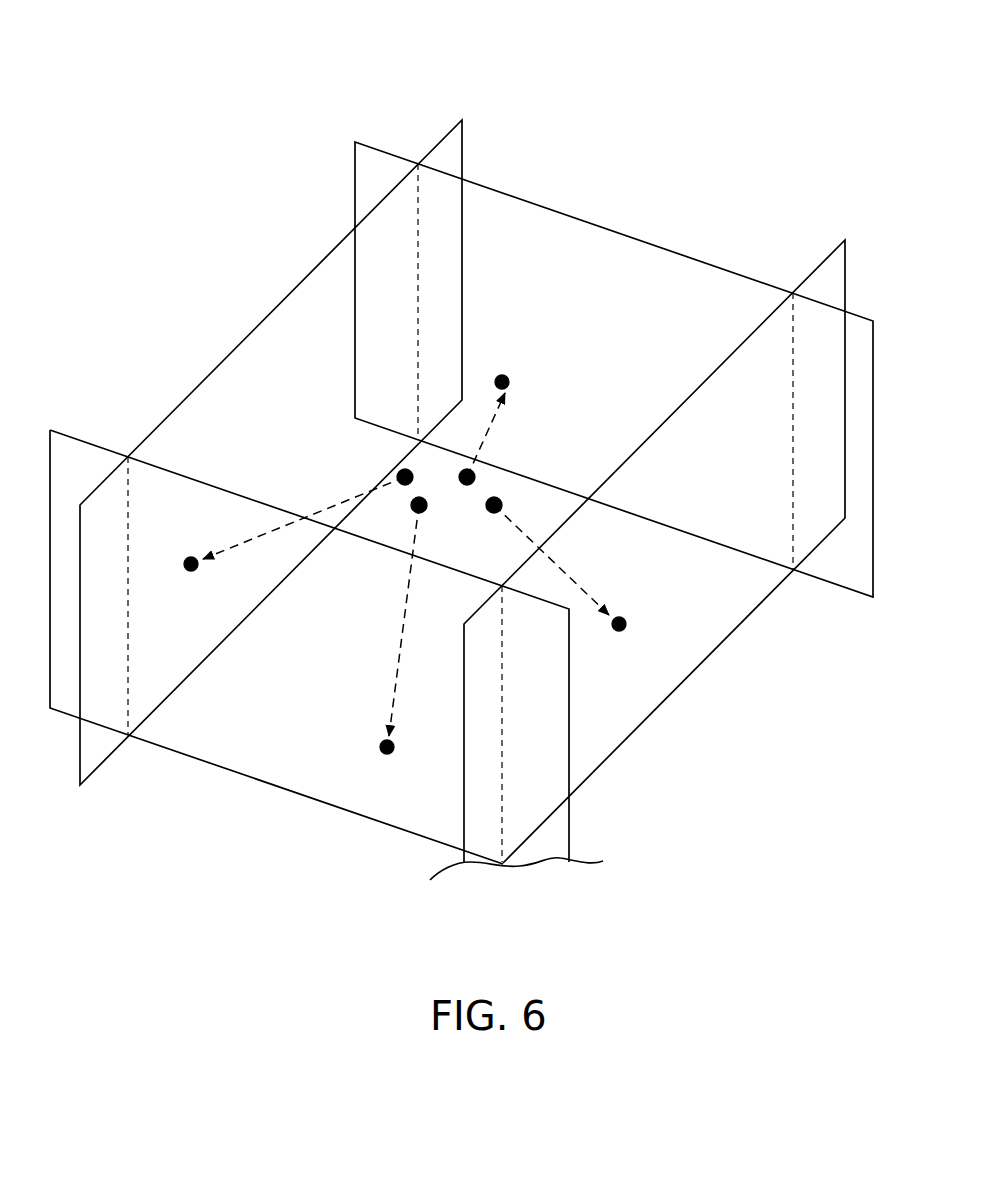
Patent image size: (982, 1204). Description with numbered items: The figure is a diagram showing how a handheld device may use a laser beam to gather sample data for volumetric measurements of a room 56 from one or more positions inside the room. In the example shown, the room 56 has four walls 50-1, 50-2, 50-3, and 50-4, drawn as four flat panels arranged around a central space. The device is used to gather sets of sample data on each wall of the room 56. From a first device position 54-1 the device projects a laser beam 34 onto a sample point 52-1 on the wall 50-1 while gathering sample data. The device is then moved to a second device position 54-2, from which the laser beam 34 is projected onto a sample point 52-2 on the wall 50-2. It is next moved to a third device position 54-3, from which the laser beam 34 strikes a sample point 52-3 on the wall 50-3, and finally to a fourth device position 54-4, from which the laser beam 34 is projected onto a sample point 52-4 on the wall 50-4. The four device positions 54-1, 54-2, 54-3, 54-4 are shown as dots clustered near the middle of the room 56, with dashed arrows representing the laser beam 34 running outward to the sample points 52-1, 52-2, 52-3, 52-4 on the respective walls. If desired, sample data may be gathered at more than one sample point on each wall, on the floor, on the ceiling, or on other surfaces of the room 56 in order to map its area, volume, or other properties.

The room 56 is at (567, 100).
The wall 50-1 is at (245, 336).
The wall 50-2 is at (278, 772).
The wall 50-3 is at (683, 650).
The wall 50-4 is at (562, 213).
The sample point 52-1 is at (192, 572).
The sample point 52-2 is at (380, 746).
The sample point 52-3 is at (626, 616).
The sample point 52-4 is at (502, 375).
The device position 54-1 is at (398, 470).
The device position 54-2 is at (413, 508).
The device position 54-3 is at (503, 503).
The device position 54-4 is at (475, 475).
The laser beam 34 is at (483, 431).